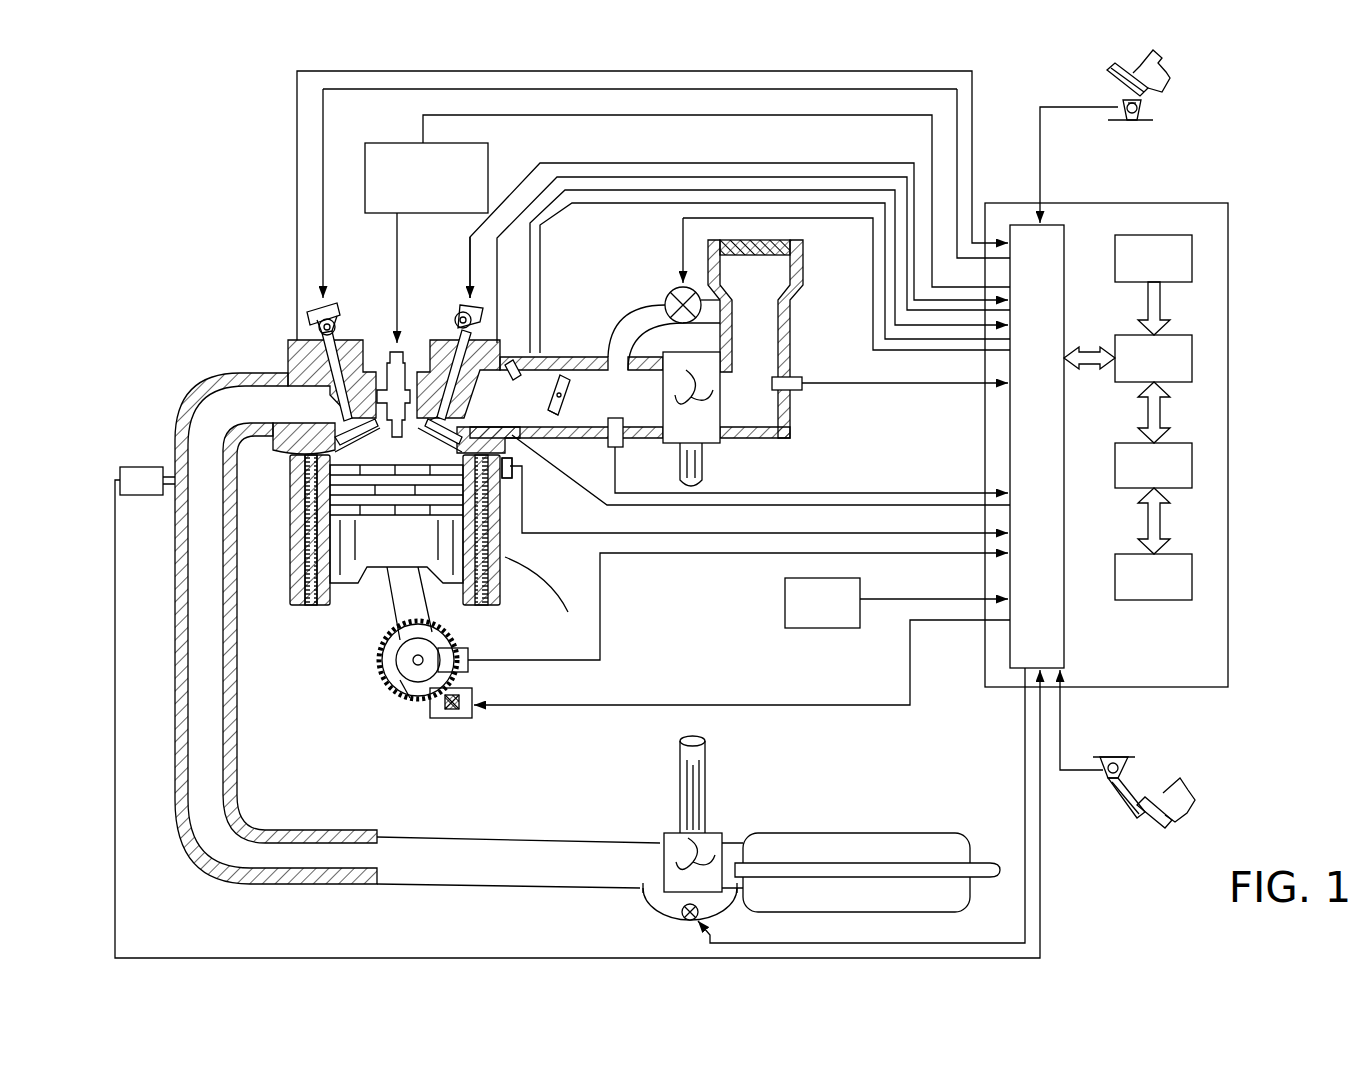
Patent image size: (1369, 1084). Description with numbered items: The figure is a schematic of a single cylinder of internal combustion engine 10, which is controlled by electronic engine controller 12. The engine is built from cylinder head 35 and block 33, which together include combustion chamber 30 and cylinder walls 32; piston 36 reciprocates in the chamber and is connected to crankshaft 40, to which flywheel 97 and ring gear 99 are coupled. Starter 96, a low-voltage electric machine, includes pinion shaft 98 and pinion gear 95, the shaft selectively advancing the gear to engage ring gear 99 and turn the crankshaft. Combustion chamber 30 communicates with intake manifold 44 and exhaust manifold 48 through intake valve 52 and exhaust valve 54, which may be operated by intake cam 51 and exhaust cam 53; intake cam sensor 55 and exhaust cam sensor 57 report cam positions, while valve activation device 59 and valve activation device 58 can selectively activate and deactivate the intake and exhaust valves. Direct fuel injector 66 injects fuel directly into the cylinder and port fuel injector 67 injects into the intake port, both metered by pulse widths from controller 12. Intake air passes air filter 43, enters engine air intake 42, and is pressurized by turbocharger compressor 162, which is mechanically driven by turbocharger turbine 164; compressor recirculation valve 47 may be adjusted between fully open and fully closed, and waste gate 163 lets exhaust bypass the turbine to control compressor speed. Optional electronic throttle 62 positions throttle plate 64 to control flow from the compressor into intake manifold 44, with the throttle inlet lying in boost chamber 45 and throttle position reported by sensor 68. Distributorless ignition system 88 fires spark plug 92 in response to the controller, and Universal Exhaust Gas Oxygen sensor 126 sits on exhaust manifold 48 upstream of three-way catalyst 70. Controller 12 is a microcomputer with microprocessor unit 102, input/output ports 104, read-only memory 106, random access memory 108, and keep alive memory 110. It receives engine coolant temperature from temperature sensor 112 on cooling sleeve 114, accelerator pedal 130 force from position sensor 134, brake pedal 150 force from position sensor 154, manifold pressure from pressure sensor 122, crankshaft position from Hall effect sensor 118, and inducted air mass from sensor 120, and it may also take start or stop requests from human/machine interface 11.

The internal combustion engine 10 is at (222, 290).
The human/machine interface 11 is at (822, 603).
The electronic engine controller 12 is at (1157, 427).
The combustion chamber 30 is at (369, 530).
The cylinder walls 32 is at (342, 600).
The block 33 is at (288, 489).
The cylinder head 35 is at (287, 333).
The piston 36 is at (380, 588).
The crankshaft 40 is at (393, 683).
The engine air intake 42 is at (711, 358).
The air filter 43 is at (780, 262).
The intake manifold 44 is at (581, 375).
The boost chamber 45 is at (612, 410).
The compressor recirculation valve 47 is at (680, 292).
The exhaust manifold 48 is at (242, 417).
The intake cam 51 is at (450, 282).
The intake valve 52 is at (445, 398).
The exhaust cam 53 is at (317, 296).
The exhaust valve 54 is at (335, 412).
The intake cam sensor 55 is at (476, 322).
The exhaust cam sensor 57 is at (315, 318).
The valve activation device 58 is at (337, 325).
The valve activation device 59 is at (455, 320).
The electronic throttle 62 is at (566, 396).
The throttle plate 64 is at (558, 416).
The direct fuel injector 66 is at (512, 468).
The port fuel injector 67 is at (514, 362).
The throttle position sensor 68 is at (562, 378).
The three-way catalyst 70 is at (788, 833).
The distributorless ignition system 88 is at (488, 158).
The spark plug 92 is at (400, 350).
The pinion gear 95 is at (460, 718).
The starter 96 is at (448, 729).
The flywheel 97 is at (390, 673).
The pinion shaft 98 is at (445, 720).
The ring gear 99 is at (412, 702).
The microprocessor unit 102 is at (1192, 360).
The input/output ports 104 is at (1065, 230).
The read-only memory 106 is at (1192, 262).
The random access memory 108 is at (1192, 470).
The keep alive memory 110 is at (1192, 585).
The temperature sensor 112 is at (531, 495).
The cooling sleeve 114 is at (549, 595).
The Hall effect sensor 118 is at (468, 652).
The air mass sensor 120 is at (790, 378).
The pressure sensor 122 is at (608, 440).
The Universal Exhaust Gas Oxygen sensor 126 is at (120, 475).
The accelerator pedal 130 is at (1170, 90).
The position sensor 134 is at (1150, 110).
The brake pedal 150 is at (1143, 818).
The position sensor 154 is at (1129, 787).
The turbocharger compressor 162 is at (705, 430).
The waste gate 163 is at (686, 921).
The turbocharger turbine 164 is at (664, 835).